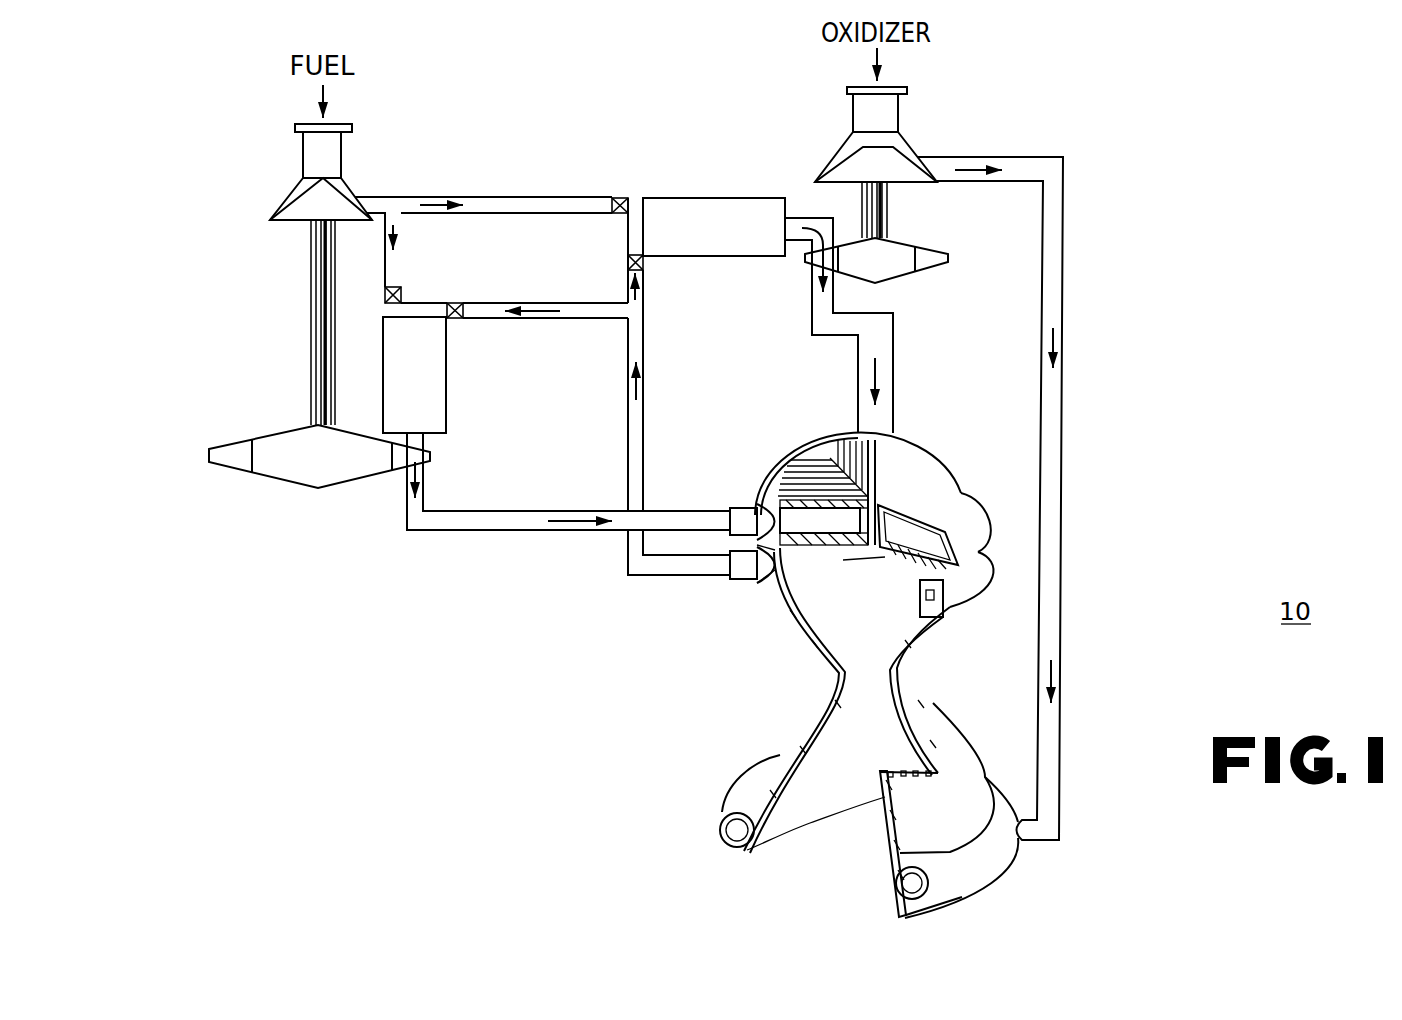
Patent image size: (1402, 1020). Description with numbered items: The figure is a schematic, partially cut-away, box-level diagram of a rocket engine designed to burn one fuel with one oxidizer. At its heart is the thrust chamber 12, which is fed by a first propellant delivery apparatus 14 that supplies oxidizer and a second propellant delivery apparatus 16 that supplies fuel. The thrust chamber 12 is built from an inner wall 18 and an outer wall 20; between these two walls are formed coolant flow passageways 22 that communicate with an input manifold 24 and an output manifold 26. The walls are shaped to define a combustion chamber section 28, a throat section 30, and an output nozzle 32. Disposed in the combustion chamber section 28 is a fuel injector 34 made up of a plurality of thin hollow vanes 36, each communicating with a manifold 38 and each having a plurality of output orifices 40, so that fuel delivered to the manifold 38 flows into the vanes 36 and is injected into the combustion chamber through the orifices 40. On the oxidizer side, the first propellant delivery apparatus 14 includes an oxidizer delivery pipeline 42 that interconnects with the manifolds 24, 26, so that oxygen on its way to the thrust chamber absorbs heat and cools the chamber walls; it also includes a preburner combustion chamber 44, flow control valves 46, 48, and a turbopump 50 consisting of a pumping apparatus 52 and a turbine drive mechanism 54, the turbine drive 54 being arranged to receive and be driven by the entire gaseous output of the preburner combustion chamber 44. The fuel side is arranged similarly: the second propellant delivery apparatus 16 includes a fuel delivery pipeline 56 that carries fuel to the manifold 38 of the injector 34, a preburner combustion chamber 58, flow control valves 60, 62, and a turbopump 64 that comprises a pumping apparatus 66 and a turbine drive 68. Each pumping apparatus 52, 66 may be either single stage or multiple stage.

The thrust chamber 12 is at (988, 663).
The first propellant delivery apparatus 14 is at (1005, 108).
The second propellant delivery apparatus 16 is at (475, 125).
The inner wall 18 is at (766, 797).
The outer wall 20 is at (776, 760).
The coolant flow passageways 22 is at (927, 770).
The input manifold 24 is at (1010, 867).
The output manifold 26 is at (758, 580).
The combustion chamber section 28 is at (868, 643).
The throat section 30 is at (882, 674).
The output nozzle 32 is at (816, 805).
The fuel injector 34 is at (787, 485).
The thin hollow vanes 36 is at (830, 458).
The manifold 38 is at (758, 502).
The output orifices 40 is at (847, 547).
The oxidizer delivery pipeline 42 is at (643, 410).
The preburner combustion chamber 44 is at (726, 197).
The flow control valve 46 is at (617, 198).
The flow control valve 48 is at (645, 268).
The turbopump 50 is at (862, 210).
The pumping apparatus 52 is at (900, 110).
The turbine drive mechanism 54 is at (910, 242).
The fuel delivery pipeline 56 is at (402, 252).
The preburner combustion chamber 58 is at (448, 369).
The flow control valve 60 is at (386, 296).
The flow control valve 62 is at (464, 303).
The turbopump 64 is at (250, 238).
The pumping apparatus 66 is at (290, 200).
The turbine drive 68 is at (250, 442).